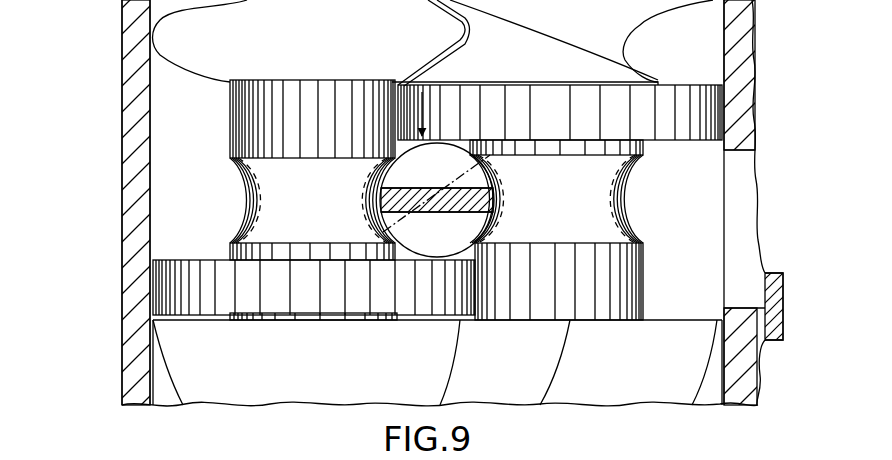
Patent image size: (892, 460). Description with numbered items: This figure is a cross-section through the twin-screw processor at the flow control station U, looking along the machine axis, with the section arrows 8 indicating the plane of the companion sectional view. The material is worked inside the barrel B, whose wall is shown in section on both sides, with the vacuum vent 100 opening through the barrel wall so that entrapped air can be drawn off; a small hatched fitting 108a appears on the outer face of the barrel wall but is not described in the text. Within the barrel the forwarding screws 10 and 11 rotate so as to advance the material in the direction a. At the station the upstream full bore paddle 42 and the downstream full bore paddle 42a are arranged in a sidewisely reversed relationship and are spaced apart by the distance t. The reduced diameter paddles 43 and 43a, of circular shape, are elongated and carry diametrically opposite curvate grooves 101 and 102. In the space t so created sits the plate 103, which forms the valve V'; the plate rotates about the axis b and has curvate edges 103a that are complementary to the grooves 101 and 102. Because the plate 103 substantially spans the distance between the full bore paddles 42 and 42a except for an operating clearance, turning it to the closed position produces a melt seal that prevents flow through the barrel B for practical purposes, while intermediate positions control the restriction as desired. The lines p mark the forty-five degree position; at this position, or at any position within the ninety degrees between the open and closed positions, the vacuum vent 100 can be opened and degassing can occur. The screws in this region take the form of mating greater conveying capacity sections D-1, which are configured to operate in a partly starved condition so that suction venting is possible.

The processing screw paddle member 10 is at (187, 50).
The processing screw paddle member 11 is at (647, 10).
The upstream full bore paddle 42 is at (560, 131).
The downstream full bore paddle 42a is at (266, 299).
The reduced diameter paddle 43 is at (552, 296).
The reduced diameter paddle 43a is at (295, 131).
The vacuum vent 100 is at (742, 185).
The groove 101 is at (297, 211).
The groove 102 is at (553, 211).
The plate 103 is at (372, 244).
The curvate edges 103a is at (382, 203).
The protrusion 108a is at (781, 302).
The barrel B is at (117, 243).
The flow control station U is at (705, 155).
The direction of material advance a is at (582, 66).
The axis b is at (430, 197).
The lines indicating forty-five degree position p is at (436, 222).
The spaced distance t is at (420, 264).
The valve V' is at (487, 112).
The greater conveying capacity sections D-1 is at (300, 376).
The section line 8- 8 is at (178, 200).